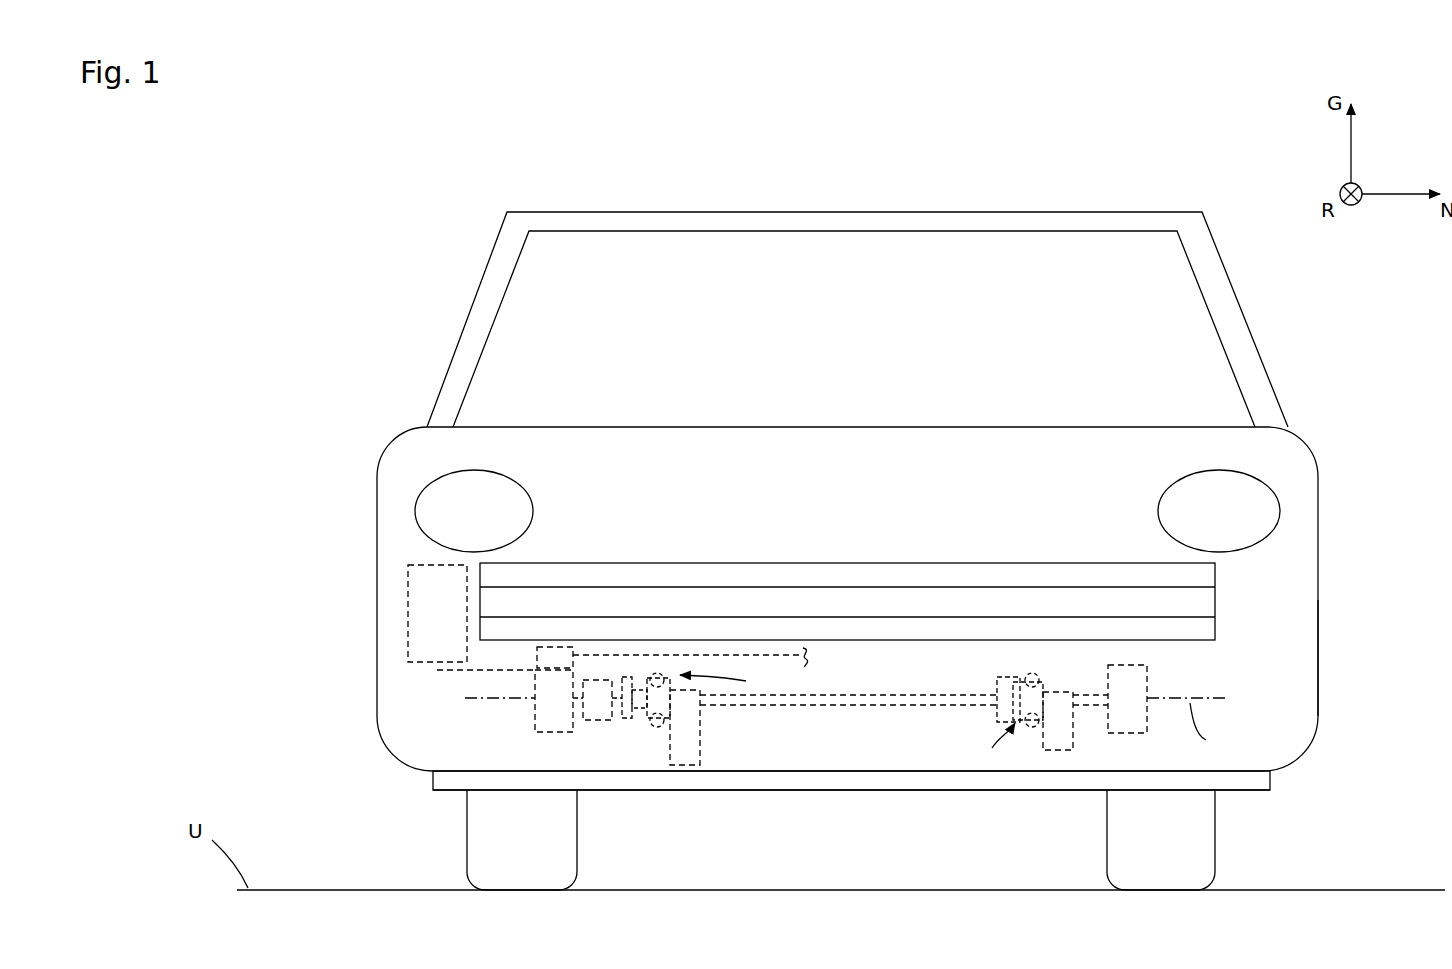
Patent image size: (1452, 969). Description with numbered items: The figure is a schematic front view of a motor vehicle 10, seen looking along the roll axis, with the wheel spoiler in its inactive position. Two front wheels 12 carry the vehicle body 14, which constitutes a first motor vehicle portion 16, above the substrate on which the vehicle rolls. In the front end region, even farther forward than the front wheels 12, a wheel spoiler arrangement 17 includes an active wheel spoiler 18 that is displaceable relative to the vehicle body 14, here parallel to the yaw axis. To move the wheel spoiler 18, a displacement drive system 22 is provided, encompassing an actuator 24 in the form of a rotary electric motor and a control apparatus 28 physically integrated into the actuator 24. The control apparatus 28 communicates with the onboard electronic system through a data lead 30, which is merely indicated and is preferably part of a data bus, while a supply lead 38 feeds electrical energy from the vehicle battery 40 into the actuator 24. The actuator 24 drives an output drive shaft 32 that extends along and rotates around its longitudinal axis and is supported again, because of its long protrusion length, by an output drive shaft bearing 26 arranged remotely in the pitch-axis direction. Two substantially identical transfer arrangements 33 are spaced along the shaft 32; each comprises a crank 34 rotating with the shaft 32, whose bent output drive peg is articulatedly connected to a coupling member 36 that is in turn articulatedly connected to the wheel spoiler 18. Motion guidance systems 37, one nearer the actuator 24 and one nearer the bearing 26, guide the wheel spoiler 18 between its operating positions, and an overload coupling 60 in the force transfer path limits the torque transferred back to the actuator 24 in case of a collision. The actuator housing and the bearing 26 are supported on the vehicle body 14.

The motor vehicle 10 is at (288, 277).
The front wheels 12 is at (432, 862).
The vehicle body 14 is at (378, 560).
The first motor vehicle portion 16 is at (857, 319).
The wheel spoiler arrangement 17 is at (1204, 665).
The active wheel spoiler 18 is at (432, 781).
The displacement drive system 22 is at (522, 715).
The actuator 24 is at (559, 701).
The output drive shaft bearing 26 is at (1127, 699).
The control apparatus 28 is at (561, 660).
The data lead 30 is at (712, 656).
The output drive shaft 32 is at (846, 704).
The transfer arrangements 33 is at (847, 718).
The crank 34 is at (627, 722).
The coupling member 36 is at (658, 728).
The motion guidance system 37 is at (871, 727).
The supply lead 38 is at (437, 668).
The vehicle battery 40 is at (437, 613).
The overload coupling 60 is at (597, 710).